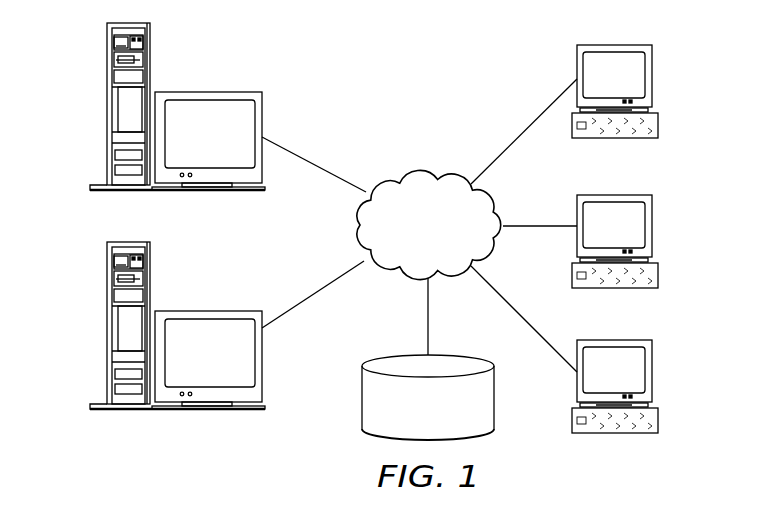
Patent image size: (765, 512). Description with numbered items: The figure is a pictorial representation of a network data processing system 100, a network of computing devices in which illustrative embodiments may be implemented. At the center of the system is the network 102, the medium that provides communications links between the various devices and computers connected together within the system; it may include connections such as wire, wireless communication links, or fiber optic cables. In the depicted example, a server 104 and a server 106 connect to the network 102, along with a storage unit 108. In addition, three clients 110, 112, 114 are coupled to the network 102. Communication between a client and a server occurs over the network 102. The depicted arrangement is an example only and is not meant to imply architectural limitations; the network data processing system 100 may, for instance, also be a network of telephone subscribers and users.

The network data processing system 100 is at (484, 63).
The network 102 is at (400, 172).
The server 104 is at (106, 105).
The server 106 is at (106, 325).
The storage unit 108 is at (362, 410).
The client 110 is at (652, 75).
The client 112 is at (652, 224).
The client 114 is at (652, 373).